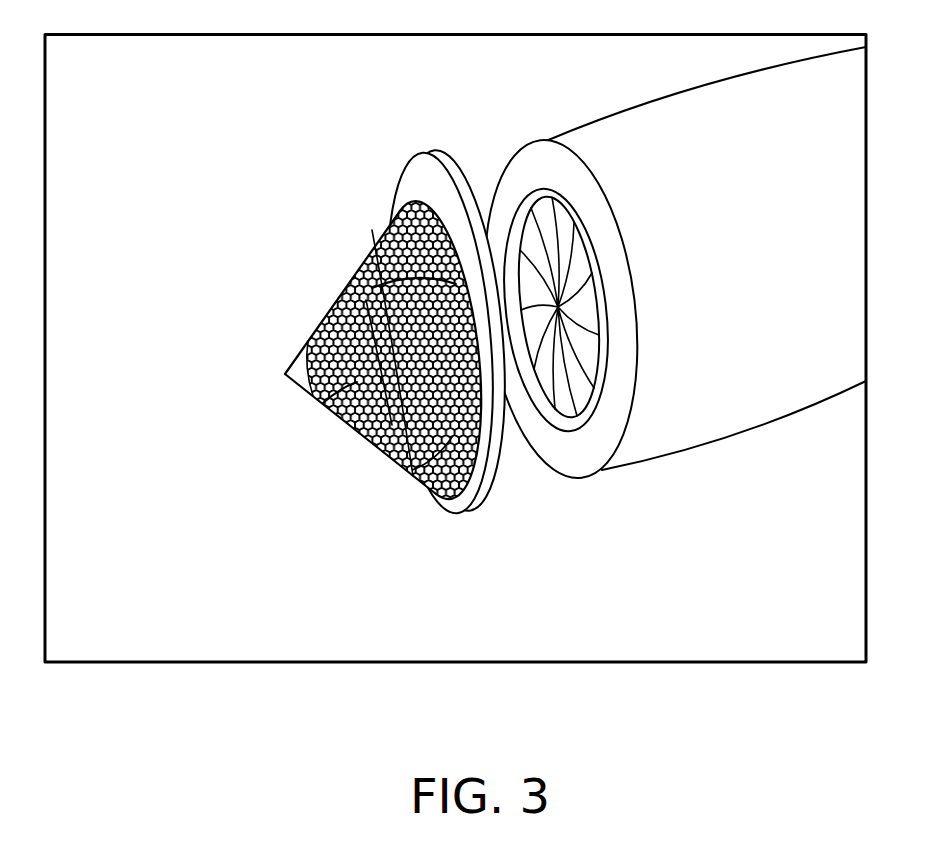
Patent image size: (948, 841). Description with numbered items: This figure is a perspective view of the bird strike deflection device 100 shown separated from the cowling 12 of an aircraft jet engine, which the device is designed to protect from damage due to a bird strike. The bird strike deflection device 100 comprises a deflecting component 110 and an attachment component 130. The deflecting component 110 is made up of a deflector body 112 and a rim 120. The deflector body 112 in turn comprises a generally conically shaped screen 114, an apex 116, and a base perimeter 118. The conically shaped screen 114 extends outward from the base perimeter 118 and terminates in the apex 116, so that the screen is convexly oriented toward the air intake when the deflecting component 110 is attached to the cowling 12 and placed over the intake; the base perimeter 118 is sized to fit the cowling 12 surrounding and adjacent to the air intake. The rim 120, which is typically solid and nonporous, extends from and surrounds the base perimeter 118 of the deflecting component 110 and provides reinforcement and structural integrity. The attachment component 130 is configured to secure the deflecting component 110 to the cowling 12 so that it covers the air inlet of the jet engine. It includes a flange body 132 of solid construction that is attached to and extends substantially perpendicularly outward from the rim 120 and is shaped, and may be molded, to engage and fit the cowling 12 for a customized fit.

The cowling 12 is at (788, 410).
The bird strike deflection device 100 is at (424, 392).
The deflecting component 110 is at (275, 437).
The deflector body 112 is at (333, 283).
The conically shaped screen 114 is at (323, 402).
The apex 116 is at (290, 376).
The base perimeter 118 is at (372, 288).
The rim 120 is at (433, 497).
The attachment component 130 is at (517, 452).
The flange body 132 is at (478, 483).